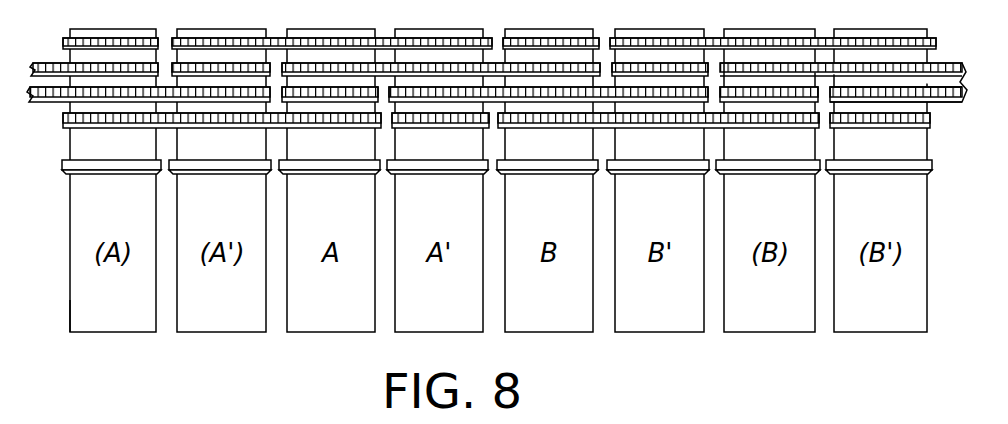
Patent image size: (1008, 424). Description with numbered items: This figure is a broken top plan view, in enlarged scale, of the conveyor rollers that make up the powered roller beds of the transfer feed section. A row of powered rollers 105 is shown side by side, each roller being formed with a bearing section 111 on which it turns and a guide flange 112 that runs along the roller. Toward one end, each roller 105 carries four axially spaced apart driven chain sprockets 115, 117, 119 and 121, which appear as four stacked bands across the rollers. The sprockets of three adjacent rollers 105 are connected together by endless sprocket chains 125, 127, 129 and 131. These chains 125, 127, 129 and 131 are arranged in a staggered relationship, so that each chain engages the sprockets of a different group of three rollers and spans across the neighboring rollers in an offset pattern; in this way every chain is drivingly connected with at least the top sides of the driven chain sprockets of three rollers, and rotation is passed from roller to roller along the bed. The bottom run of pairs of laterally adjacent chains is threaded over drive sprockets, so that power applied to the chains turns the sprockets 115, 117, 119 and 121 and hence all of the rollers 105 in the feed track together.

The powered roller 105 is at (106, 333).
The bearing section 111 is at (68, 318).
The guide flange 112 is at (101, 173).
The driven chain sprocket 115 is at (105, 45).
The driven chain sprocket 117 is at (56, 66).
The driven chain sprocket 119 is at (193, 103).
The driven chain sprocket 121 is at (93, 128).
The endless sprocket chain 125 is at (276, 42).
The endless sprocket chain 127 is at (380, 68).
The endless sprocket chain 129 is at (490, 90).
The endless sprocket chain 131 is at (565, 115).